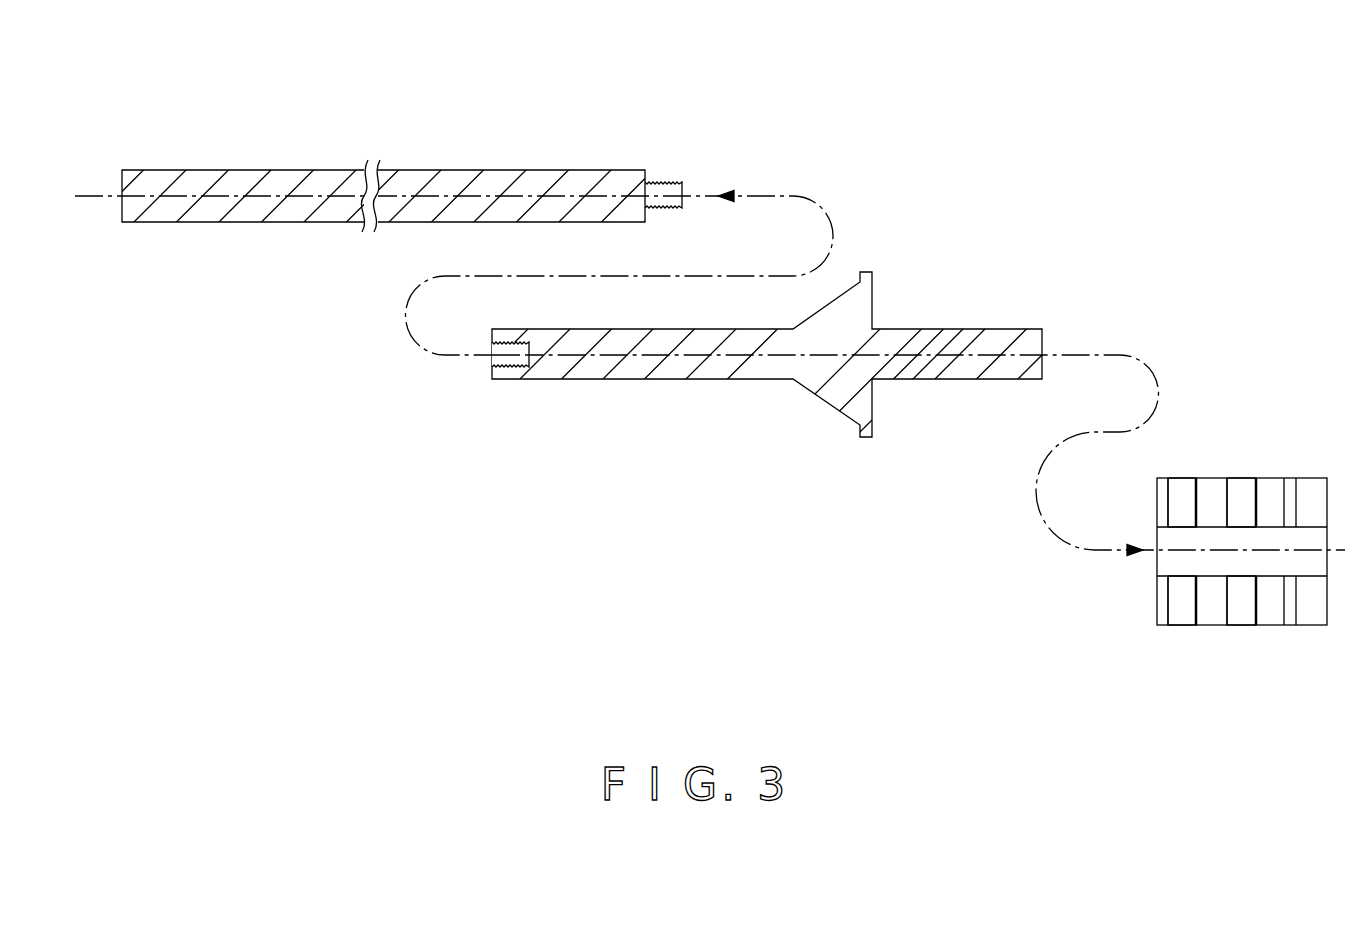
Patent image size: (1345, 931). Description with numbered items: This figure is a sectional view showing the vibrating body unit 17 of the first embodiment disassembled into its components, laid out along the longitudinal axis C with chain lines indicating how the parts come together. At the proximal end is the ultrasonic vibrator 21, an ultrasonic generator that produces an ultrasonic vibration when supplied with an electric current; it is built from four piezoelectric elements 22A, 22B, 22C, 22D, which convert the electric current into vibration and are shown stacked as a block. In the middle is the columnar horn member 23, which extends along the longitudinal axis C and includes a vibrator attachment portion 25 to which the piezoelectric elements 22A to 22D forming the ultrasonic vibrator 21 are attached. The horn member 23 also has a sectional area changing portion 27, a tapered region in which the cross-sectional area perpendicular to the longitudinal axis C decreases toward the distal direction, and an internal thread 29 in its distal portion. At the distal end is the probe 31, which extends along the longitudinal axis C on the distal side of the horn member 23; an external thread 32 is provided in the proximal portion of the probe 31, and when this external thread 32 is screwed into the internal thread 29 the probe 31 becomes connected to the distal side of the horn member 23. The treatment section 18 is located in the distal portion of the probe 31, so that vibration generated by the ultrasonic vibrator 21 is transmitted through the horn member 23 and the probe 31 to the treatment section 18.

The vibrating body unit 17 is at (697, 380).
The treatment section 18 is at (372, 168).
The probe 31 is at (410, 187).
The external thread 32 is at (662, 181).
The longitudinal axis C is at (96, 194).
The horn member 23 is at (770, 372).
The vibrator attachment portion 25 is at (914, 329).
The sectional area changing portion 27 is at (827, 388).
The internal thread 29 is at (496, 362).
The ultrasonic vibrator 21 is at (1242, 575).
The piezoelectric element 22A is at (1182, 493).
The piezoelectric element 22B is at (1212, 615).
The piezoelectric element 22C is at (1240, 492).
The piezoelectric element 22D is at (1270, 615).